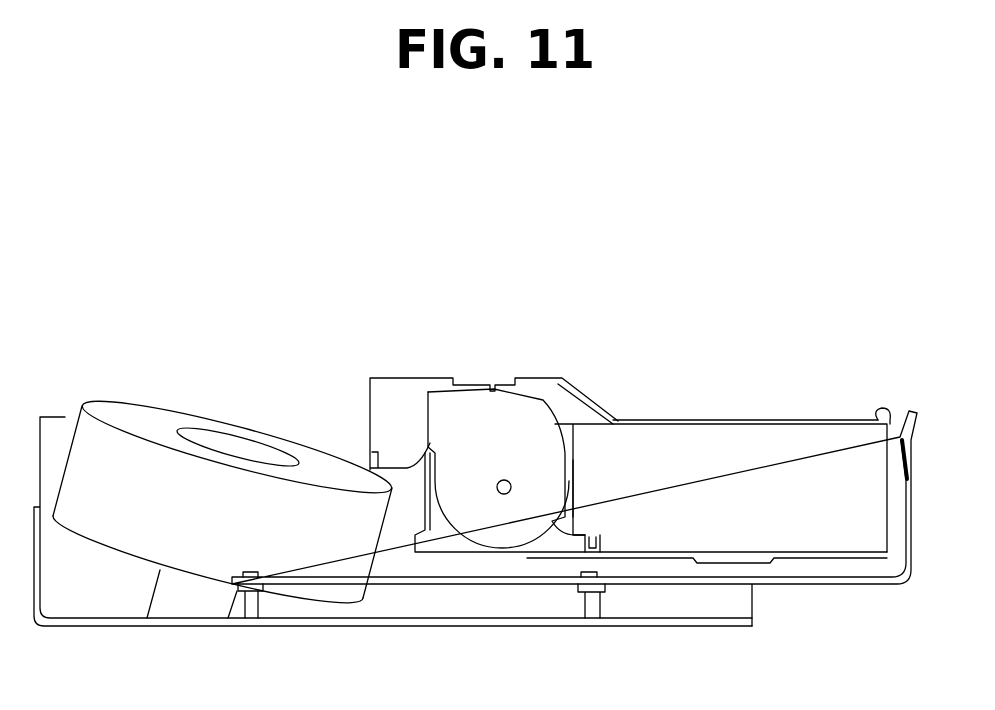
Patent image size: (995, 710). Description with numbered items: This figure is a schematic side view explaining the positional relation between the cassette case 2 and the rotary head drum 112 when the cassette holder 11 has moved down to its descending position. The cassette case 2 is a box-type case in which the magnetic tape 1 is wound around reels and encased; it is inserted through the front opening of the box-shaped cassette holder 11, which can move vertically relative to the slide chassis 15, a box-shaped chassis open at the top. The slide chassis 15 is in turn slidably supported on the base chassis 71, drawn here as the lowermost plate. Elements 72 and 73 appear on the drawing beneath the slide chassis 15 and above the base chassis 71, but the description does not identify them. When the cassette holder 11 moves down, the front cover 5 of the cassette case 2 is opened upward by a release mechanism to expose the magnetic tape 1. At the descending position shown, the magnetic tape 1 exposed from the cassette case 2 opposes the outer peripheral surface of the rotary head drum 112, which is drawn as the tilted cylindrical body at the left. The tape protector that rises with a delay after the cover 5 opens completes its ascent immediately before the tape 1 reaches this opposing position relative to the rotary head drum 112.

The magnetic tape 1 is at (429, 449).
The cassette case 2 is at (720, 450).
The front cover 5 is at (490, 410).
The cassette holder 11 is at (833, 420).
The slide chassis 15 is at (830, 585).
The base chassis 71 is at (530, 626).
The screw 72 is at (252, 608).
The screw 73 is at (593, 606).
The rotary head drum 112 is at (150, 425).